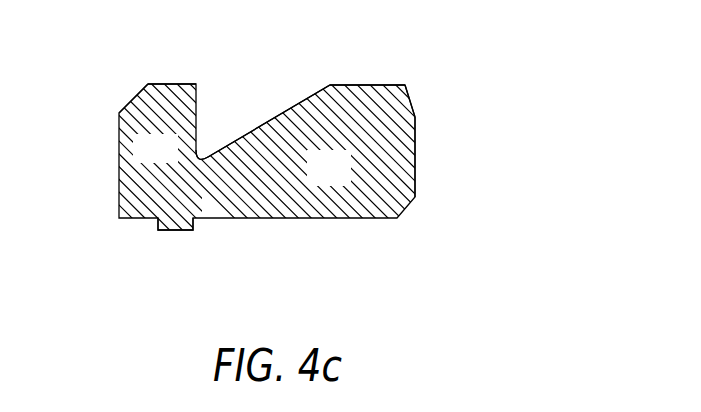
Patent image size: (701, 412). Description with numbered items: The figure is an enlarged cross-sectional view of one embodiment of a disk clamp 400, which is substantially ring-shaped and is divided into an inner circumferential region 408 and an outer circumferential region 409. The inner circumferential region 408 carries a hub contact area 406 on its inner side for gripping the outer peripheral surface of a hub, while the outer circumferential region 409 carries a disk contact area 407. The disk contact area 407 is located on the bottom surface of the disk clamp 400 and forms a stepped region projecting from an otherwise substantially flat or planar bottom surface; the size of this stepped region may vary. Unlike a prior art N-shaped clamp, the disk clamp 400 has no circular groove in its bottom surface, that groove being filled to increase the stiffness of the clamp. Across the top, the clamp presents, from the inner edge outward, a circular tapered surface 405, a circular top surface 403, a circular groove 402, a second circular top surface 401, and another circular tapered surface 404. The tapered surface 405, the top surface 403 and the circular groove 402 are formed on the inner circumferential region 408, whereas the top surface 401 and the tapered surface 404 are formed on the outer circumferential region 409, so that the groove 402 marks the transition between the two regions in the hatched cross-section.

The disk clamp 400 is at (563, 34).
The circular top surface 401 is at (175, 84).
The circular groove 402 is at (272, 119).
The circular top surface 403 is at (370, 85).
The circular tapered surface 404 is at (132, 103).
The circular tapered surface 405 is at (408, 102).
The hub contact area 406 is at (417, 148).
The disk contact area 407 is at (175, 240).
The inner circumferential region 408 is at (326, 157).
The outer circumferential region 409 is at (174, 157).